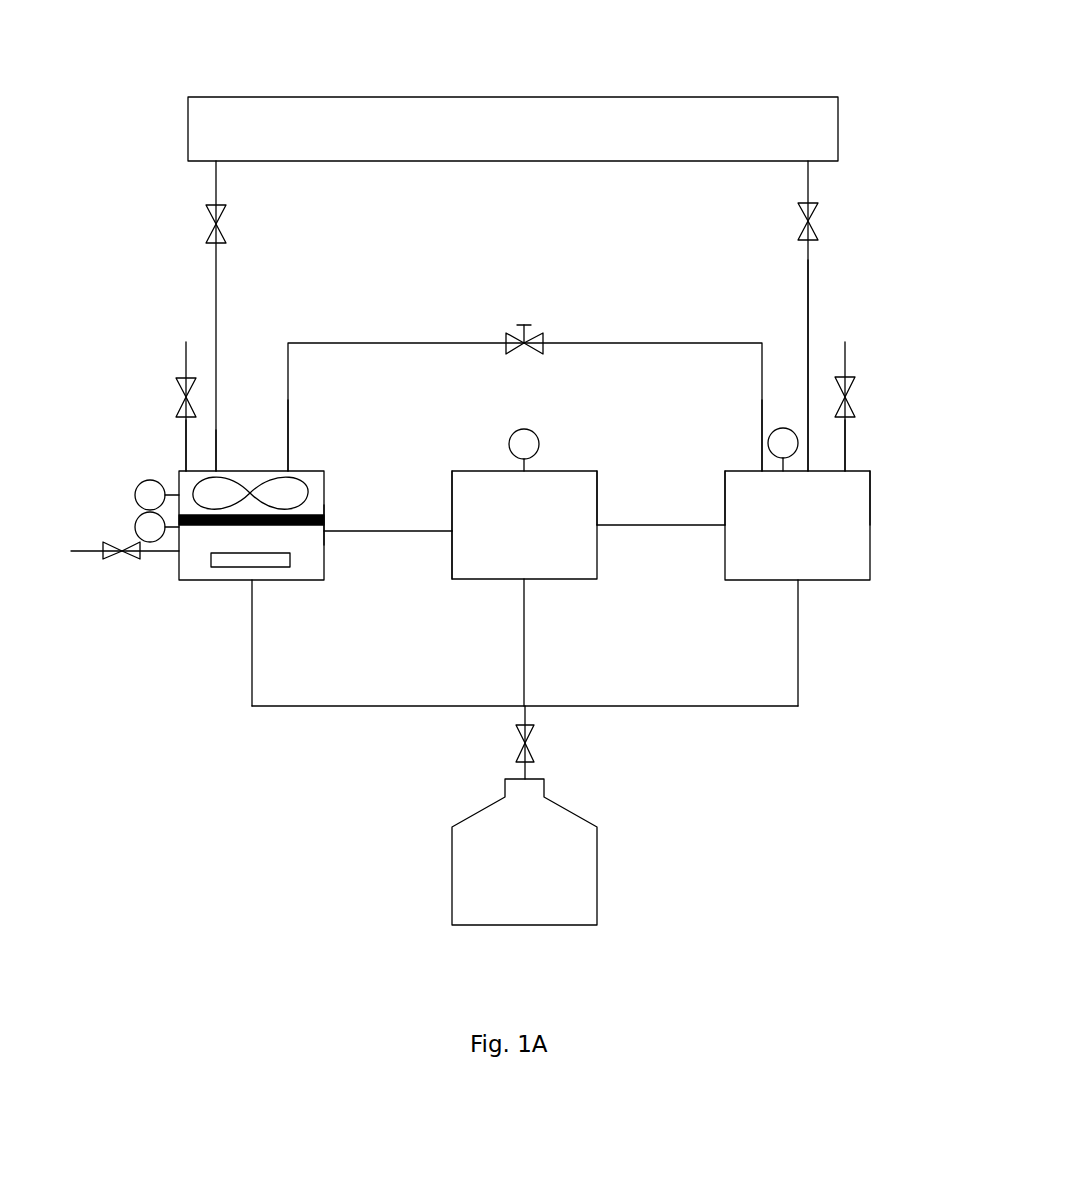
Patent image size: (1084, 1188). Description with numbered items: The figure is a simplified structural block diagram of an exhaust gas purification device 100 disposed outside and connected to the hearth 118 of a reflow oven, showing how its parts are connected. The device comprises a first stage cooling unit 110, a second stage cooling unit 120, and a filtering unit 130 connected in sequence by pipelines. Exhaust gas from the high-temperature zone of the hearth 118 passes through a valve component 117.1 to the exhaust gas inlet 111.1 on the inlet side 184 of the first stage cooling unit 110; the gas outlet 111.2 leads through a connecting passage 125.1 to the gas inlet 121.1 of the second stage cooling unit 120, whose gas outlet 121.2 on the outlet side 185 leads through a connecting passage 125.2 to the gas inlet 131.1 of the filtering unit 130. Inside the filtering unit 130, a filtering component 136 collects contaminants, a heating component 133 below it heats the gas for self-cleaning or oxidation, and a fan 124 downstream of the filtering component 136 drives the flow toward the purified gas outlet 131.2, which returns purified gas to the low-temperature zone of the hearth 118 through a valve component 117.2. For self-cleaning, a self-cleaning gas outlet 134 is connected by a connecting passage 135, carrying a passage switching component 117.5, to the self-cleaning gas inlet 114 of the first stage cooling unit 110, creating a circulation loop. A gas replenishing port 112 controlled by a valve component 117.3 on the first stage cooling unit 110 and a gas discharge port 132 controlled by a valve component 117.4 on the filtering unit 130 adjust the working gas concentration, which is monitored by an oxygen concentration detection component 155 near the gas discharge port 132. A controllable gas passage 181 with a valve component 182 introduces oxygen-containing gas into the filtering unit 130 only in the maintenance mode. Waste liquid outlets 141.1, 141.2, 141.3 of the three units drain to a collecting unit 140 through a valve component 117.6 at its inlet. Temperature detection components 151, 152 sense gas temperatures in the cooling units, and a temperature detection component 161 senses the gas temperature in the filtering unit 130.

The exhaust gas purification device 100 is at (876, 236).
The first stage cooling unit 110 is at (832, 560).
The exhaust gas inlet 111.1 is at (810, 470).
The gas outlet 111.2 is at (723, 503).
The gas replenishing port 112 is at (847, 468).
The self-cleaning gas inlet 114 is at (762, 468).
The valve component 117.1 is at (800, 238).
The valve component 117.2 is at (216, 224).
The valve component 117.3 is at (848, 397).
The valve component 117.4 is at (179, 392).
The passage switching component 117.5 is at (541, 338).
The valve component 117.6 is at (532, 752).
The hearth 118 is at (523, 118).
The second stage cooling unit 120 is at (565, 487).
The gas inlet 121.1 is at (598, 523).
The gas outlet 121.2 is at (452, 528).
The fan 124 is at (262, 484).
The connecting passage 125.1 is at (658, 527).
The connecting passage 125.2 is at (388, 533).
The filtering unit 130 is at (197, 567).
The gas inlet 131.1 is at (362, 510).
The purified gas outlet 131.2 is at (218, 465).
The gas discharge port 132 is at (183, 467).
The heating component 133 is at (228, 558).
The self-cleaning gas outlet 134 is at (290, 465).
The connecting passage 135 is at (625, 343).
The filtering component 136 is at (305, 512).
The collecting unit 140 is at (573, 853).
The first waste liquid outlet 141.1 is at (798, 582).
The waste liquid outlet 141.2 is at (527, 580).
The waste liquid outlet 141.3 is at (253, 582).
The temperature detection component 151 is at (783, 428).
The temperature detection component 152 is at (524, 429).
The oxygen concentration detection component 155 is at (136, 492).
The temperature detection component 161 is at (134, 527).
The controllable gas passage 181 is at (70, 552).
The valve component 182 is at (124, 560).
The inlet side 184 is at (872, 473).
The outlet side 185 is at (452, 553).